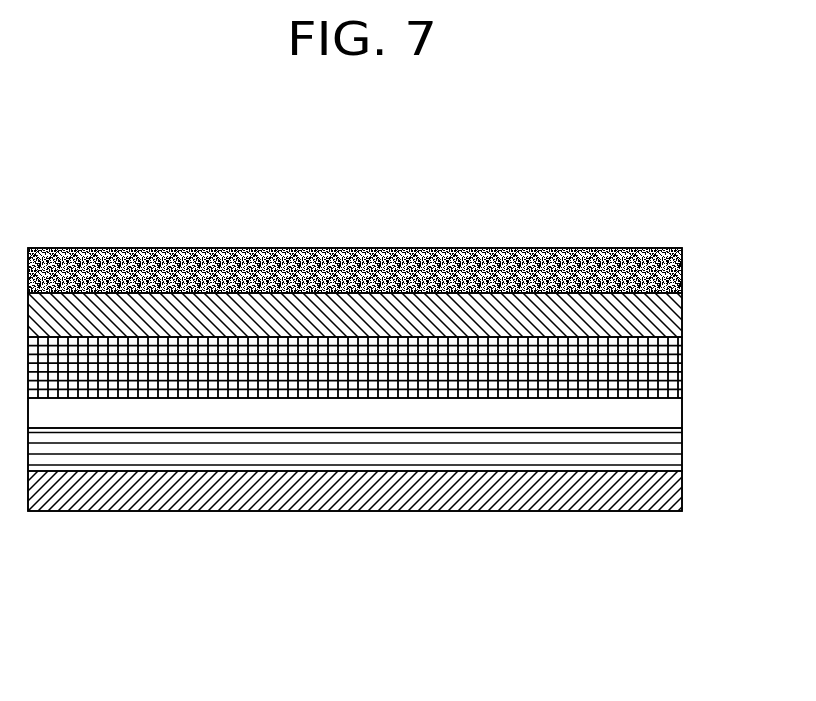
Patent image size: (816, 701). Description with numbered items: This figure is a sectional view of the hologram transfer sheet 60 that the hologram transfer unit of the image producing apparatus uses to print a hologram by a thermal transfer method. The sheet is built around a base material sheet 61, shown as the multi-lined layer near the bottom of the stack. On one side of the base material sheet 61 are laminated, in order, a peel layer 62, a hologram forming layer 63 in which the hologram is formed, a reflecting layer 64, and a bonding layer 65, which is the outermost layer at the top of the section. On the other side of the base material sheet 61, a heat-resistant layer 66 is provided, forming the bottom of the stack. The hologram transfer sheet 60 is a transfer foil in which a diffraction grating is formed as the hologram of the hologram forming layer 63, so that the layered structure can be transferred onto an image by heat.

The hologram transfer sheet 60 is at (93, 184).
The base material sheet 61 is at (682, 451).
The peel layer 62 is at (682, 412).
The hologram forming layer 63 is at (682, 373).
The reflecting layer 64 is at (682, 316).
The bonding layer 65 is at (682, 273).
The heat-resistant layer 66 is at (682, 498).